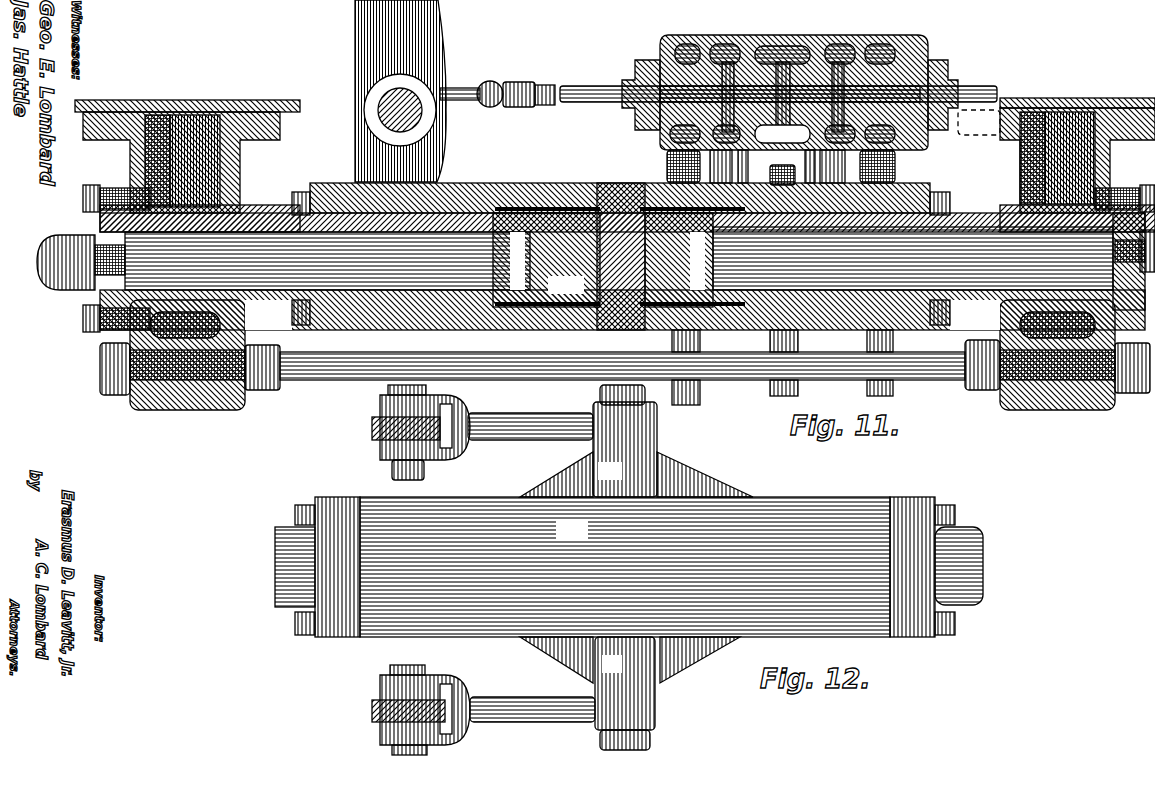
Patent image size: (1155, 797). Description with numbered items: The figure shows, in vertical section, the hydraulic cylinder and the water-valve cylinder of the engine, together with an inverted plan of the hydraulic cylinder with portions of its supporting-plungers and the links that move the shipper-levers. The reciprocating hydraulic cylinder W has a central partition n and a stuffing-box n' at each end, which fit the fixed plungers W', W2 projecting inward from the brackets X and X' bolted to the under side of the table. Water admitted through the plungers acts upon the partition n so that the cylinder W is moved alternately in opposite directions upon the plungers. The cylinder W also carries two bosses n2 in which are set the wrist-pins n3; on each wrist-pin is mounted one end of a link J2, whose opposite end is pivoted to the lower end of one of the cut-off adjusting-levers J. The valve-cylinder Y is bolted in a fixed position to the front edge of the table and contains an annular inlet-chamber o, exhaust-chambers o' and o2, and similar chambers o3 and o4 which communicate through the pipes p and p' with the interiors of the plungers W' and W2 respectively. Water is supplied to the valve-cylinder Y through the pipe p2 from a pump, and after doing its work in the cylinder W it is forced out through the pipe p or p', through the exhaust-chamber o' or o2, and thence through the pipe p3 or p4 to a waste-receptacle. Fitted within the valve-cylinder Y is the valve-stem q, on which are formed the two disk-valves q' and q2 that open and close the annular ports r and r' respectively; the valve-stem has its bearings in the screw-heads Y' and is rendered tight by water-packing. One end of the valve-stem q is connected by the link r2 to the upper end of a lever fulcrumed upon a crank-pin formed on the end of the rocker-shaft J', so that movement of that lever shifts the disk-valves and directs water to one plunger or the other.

In FIG. 11, the bracket X is at (187, 268).
In FIG. 11, the bracket X' is at (1060, 265).
In FIG. 11, the reciprocating hydraulic cylinder W is at (627, 269).
In FIG. 12, the reciprocating hydraulic cylinder W is at (625, 567).
In FIG. 11, the fixed plunger W' is at (259, 210).
In FIG. 12, the fixed plunger W' is at (288, 570).
In FIG. 11, the fixed plunger W2 is at (980, 226).
In FIG. 12, the fixed plunger W2 is at (962, 534).
In FIG. 11, the central partition n is at (620, 242).
In FIG. 12, the central partition n is at (630, 683).
In FIG. 11, the stuffing-box n' is at (621, 245).
In FIG. 12, the boss n2 is at (636, 449).
In FIG. 12, the wrist-pin n3 is at (617, 386).
In FIG. 11, the cut-off adjusting-lever J is at (405, 91).
In FIG. 12, the cut-off adjusting-lever J is at (408, 570).
In FIG. 11, the rocker-shaft J' is at (384, 110).
In FIG. 12, the link J2 is at (505, 420).
In FIG. 11, the pipe p is at (81, 252).
In FIG. 11, the pipe p' is at (825, 166).
In FIG. 11, the supply pipe p2 is at (804, 342).
In FIG. 11, the waste pipe p3 is at (667, 176).
In FIG. 11, the waste pipe p4 is at (895, 174).
In FIG. 11, the valve-stem q is at (778, 93).
In FIG. 11, the disk-valve q' is at (755, 37).
In FIG. 11, the disk-valve q2 is at (838, 64).
In FIG. 11, the annular port r is at (748, 166).
In FIG. 11, the annular port r' is at (810, 166).
In FIG. 11, the link r2 is at (470, 90).
In FIG. 11, the annular inlet-chamber o is at (782, 127).
In FIG. 11, the exhaust-chamber o' is at (686, 37).
In FIG. 11, the exhaust-chamber o2 is at (888, 44).
In FIG. 11, the chamber o3 is at (728, 44).
In FIG. 11, the chamber o4 is at (840, 44).
In FIG. 11, the valve-cylinder Y is at (794, 78).
In FIG. 11, the screw-head Y' is at (782, 89).